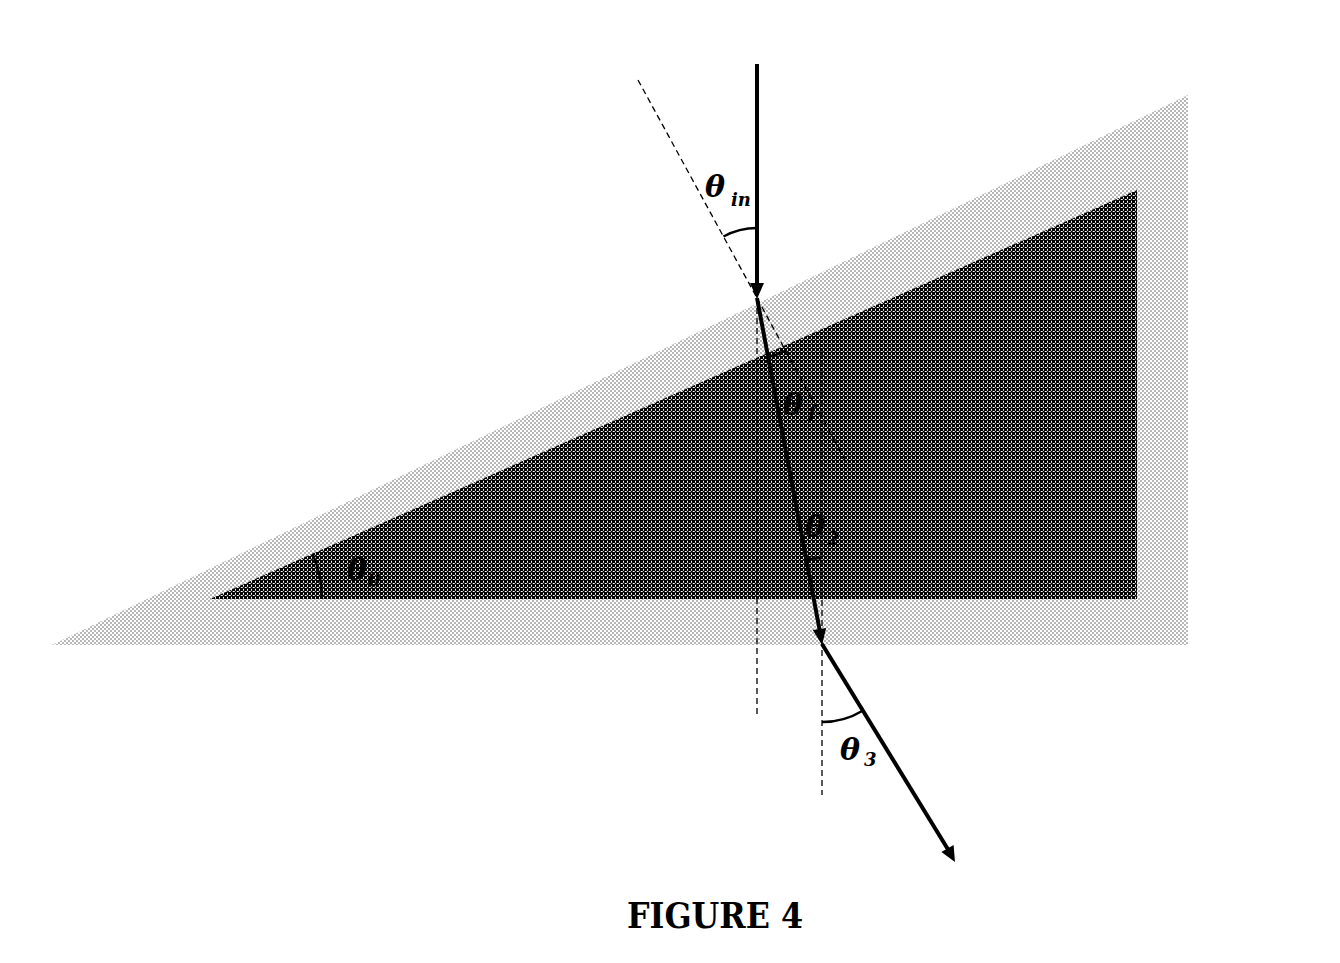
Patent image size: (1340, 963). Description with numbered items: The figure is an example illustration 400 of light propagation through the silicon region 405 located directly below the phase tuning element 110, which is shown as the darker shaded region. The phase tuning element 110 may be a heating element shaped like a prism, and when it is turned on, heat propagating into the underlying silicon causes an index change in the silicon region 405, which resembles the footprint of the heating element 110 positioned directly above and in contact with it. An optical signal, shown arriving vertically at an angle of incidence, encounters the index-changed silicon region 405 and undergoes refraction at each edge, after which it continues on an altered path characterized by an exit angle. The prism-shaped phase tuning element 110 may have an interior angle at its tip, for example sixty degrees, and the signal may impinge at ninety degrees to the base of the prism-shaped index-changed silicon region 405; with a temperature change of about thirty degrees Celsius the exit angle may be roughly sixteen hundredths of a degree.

The illustration 400 is at (671, 322).
The phase tuning element 110 is at (1112, 228).
The silicon region 405 is at (1177, 523).